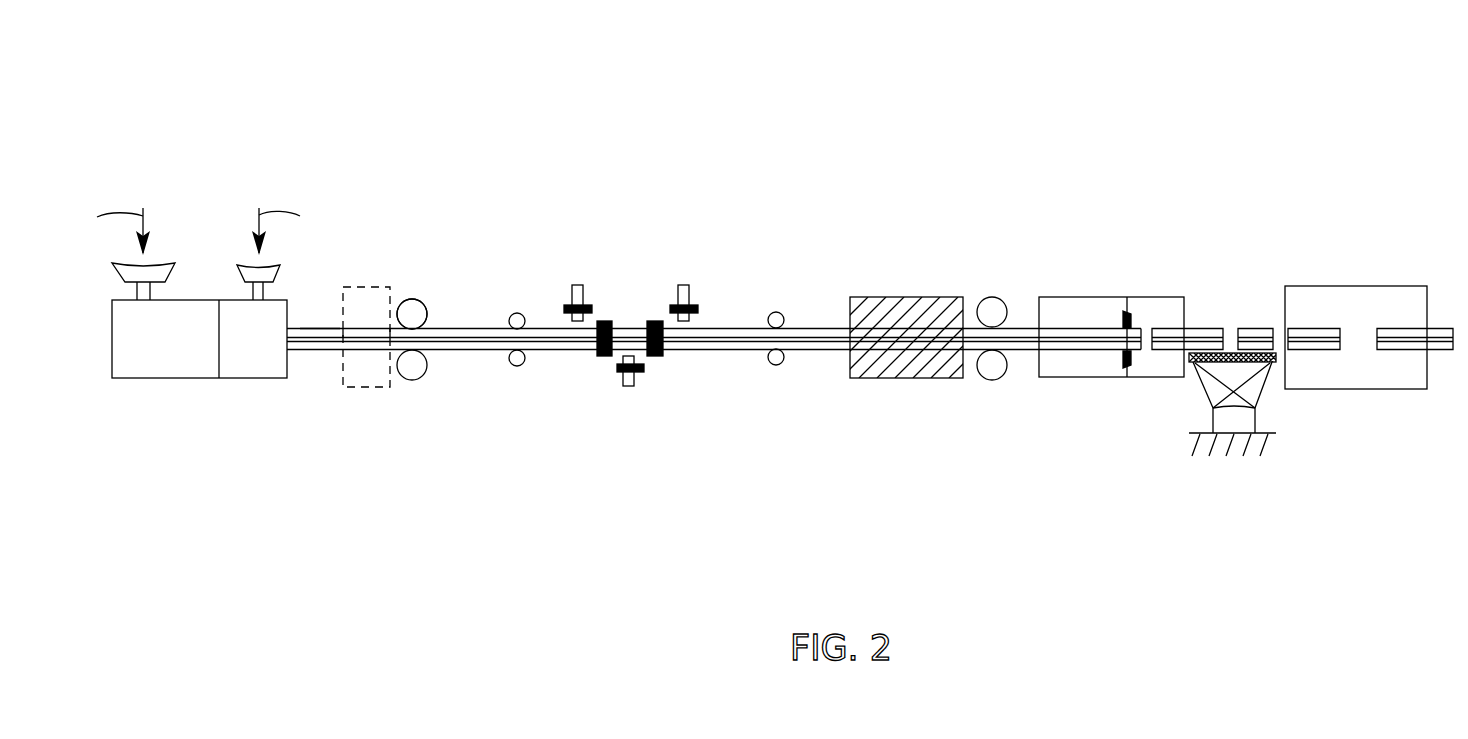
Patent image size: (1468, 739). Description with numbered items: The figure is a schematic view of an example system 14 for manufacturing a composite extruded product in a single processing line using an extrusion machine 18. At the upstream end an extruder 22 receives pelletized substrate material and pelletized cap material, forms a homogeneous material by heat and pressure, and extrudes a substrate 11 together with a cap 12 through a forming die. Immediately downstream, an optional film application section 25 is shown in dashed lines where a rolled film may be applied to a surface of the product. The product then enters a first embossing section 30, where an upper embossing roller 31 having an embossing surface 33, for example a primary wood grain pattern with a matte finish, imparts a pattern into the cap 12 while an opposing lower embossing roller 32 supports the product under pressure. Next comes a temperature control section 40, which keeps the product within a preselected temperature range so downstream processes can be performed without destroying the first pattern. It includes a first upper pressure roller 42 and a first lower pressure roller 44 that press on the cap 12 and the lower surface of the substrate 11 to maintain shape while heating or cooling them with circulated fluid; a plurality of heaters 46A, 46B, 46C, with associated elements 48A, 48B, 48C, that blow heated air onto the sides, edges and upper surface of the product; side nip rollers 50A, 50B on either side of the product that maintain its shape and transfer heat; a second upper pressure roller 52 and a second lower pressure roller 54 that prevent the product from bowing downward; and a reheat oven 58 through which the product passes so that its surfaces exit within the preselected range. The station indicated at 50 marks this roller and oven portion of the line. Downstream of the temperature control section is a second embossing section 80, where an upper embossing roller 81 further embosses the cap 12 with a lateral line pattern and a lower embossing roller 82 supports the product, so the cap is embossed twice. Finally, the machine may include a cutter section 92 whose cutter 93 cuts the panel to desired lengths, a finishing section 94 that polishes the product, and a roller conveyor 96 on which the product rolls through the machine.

The substrate 11 is at (310, 343).
The cap 12 is at (300, 332).
The system 14 is at (975, 108).
The extrusion machine 18 is at (585, 175).
The extruder 22 is at (193, 445).
The film application section 25 is at (347, 388).
The first embossing section 30 is at (431, 413).
The upper embossing roller 31 is at (409, 298).
The lower embossing roller 32 is at (411, 381).
The embossing surface 33 is at (426, 305).
The temperature control section 40 is at (721, 374).
The first upper pressure roller 42 is at (517, 313).
The first lower pressure roller 44 is at (517, 366).
The first pair of heaters 46A is at (577, 285).
The second pair of heaters 46B is at (636, 377).
The third pair of heaters 46C is at (683, 285).
The first applicator head 48A is at (564, 308).
The second applicator head 48B is at (616, 411).
The third applicator head 48C is at (698, 308).
The processing station 50 is at (896, 276).
The side nip roller 50A is at (597, 356).
The side nip roller 50B is at (663, 355).
The second upper pressure roller 52 is at (777, 312).
The second lower pressure roller 54 is at (776, 365).
The reheat oven 58 is at (912, 297).
The second embossing section 80 is at (1202, 285).
The upper embossing roller 81 is at (999, 299).
The lower embossing roller 82 is at (999, 378).
The cutter section 92 is at (1062, 297).
The cutting blade 93 is at (1131, 318).
The finishing section 94 is at (1313, 300).
The roller conveyor 96 is at (1213, 392).